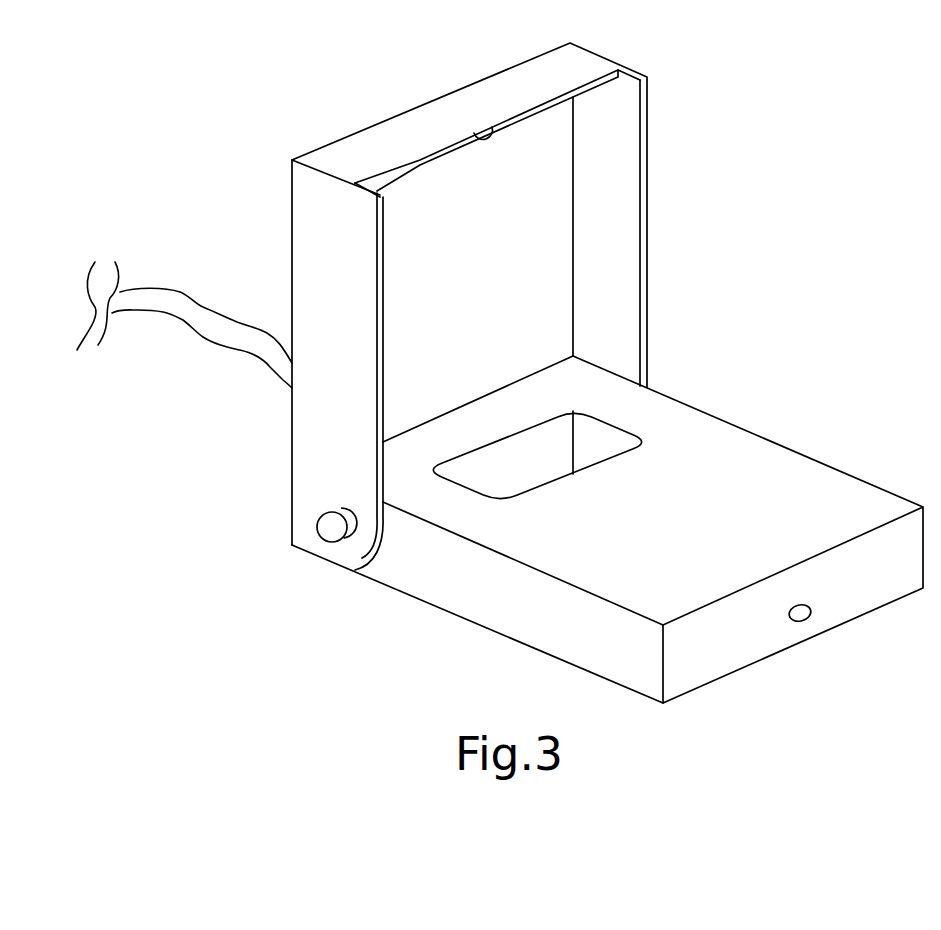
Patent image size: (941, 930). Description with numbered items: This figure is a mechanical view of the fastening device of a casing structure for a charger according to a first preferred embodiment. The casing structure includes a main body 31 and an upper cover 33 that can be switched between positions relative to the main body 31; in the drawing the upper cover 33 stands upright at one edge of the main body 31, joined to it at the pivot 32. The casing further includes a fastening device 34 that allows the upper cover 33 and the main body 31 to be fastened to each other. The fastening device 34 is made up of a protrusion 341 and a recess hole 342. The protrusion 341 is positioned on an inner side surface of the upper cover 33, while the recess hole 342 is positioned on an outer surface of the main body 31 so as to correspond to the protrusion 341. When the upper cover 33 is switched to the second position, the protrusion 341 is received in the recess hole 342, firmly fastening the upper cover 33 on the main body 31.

The main body 31 is at (842, 483).
The pivot shaft (hinge) 32 is at (327, 515).
The upper cover 33 is at (570, 70).
The fastening device 34 is at (657, 375).
The protrusion 341 is at (500, 137).
The recess hole 342 is at (805, 607).